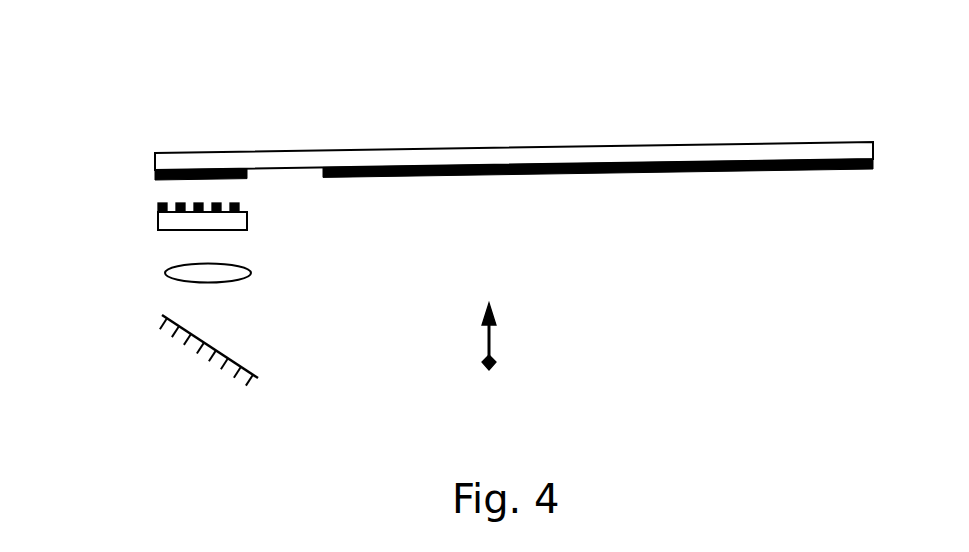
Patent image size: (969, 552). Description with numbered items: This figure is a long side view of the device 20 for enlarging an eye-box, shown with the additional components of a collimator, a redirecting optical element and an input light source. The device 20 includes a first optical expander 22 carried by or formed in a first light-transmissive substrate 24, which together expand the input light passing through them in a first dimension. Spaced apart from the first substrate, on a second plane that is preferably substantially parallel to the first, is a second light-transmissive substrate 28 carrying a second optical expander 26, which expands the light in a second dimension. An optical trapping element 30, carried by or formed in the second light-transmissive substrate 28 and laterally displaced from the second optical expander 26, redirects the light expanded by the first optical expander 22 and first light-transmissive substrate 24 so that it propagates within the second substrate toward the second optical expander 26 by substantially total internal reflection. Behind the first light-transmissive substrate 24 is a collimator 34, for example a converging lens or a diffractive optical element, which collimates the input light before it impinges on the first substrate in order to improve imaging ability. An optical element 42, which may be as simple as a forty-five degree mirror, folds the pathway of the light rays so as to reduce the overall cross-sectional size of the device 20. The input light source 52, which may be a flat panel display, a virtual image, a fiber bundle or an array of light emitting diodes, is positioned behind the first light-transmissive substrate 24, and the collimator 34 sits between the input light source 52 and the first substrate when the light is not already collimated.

The device 20 is at (487, 46).
The first optical expander 22 is at (247, 204).
The first light-transmissive substrate 24 is at (158, 222).
The second optical expander 26 is at (840, 170).
The second light-transmissive substrate 28 is at (175, 162).
The optical trapping element 30 is at (155, 170).
The collimator 34 is at (167, 273).
The optical element 42 is at (195, 355).
The input light source 52 is at (500, 342).